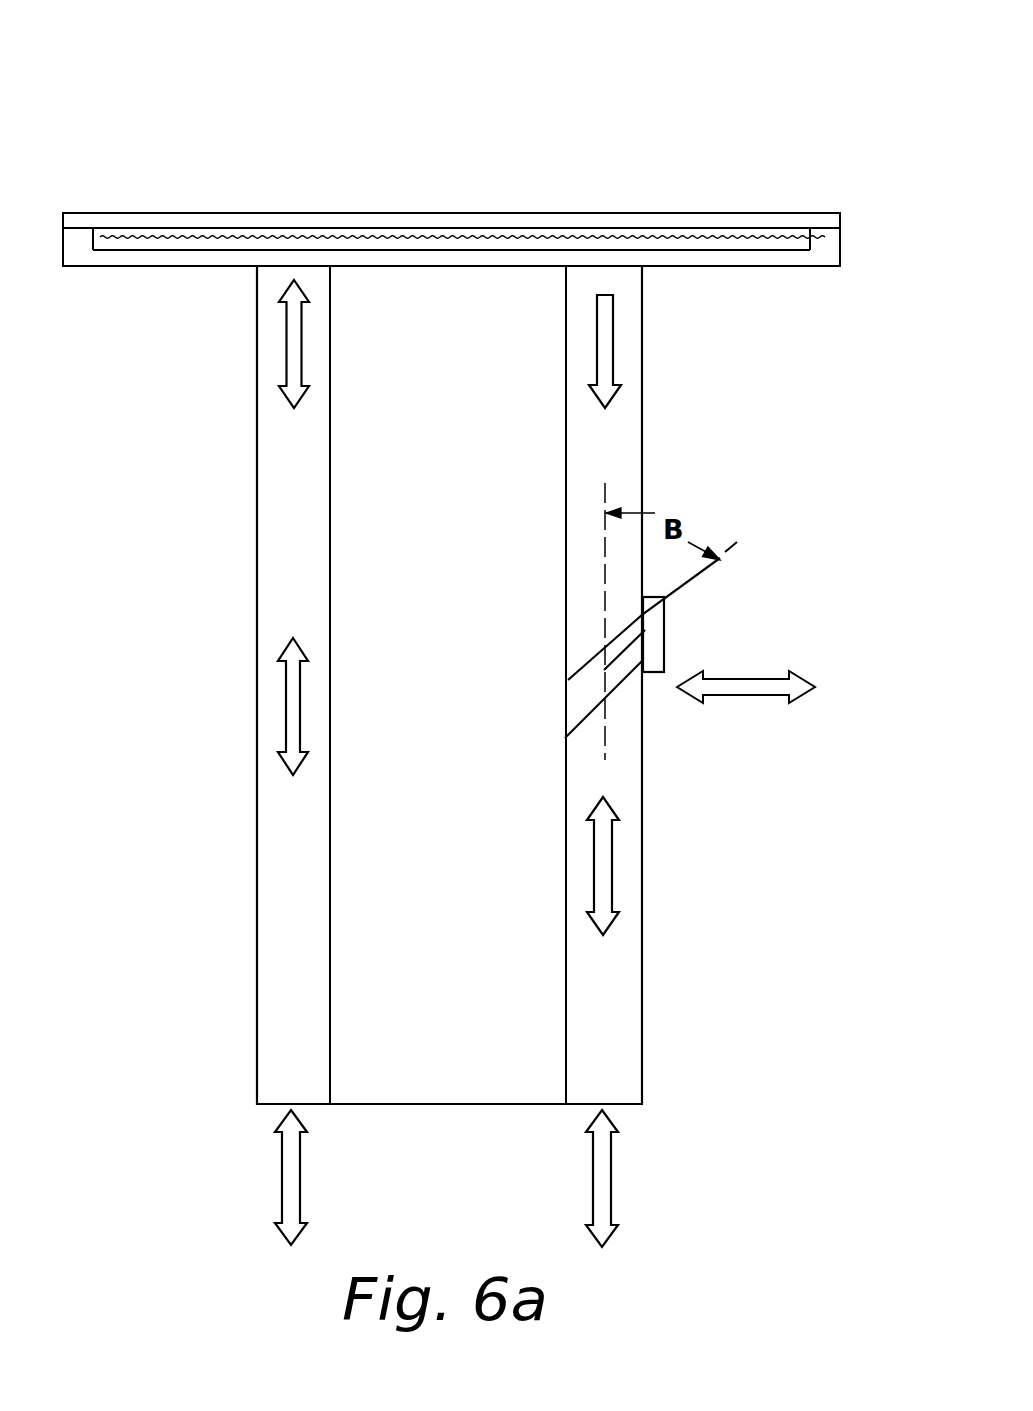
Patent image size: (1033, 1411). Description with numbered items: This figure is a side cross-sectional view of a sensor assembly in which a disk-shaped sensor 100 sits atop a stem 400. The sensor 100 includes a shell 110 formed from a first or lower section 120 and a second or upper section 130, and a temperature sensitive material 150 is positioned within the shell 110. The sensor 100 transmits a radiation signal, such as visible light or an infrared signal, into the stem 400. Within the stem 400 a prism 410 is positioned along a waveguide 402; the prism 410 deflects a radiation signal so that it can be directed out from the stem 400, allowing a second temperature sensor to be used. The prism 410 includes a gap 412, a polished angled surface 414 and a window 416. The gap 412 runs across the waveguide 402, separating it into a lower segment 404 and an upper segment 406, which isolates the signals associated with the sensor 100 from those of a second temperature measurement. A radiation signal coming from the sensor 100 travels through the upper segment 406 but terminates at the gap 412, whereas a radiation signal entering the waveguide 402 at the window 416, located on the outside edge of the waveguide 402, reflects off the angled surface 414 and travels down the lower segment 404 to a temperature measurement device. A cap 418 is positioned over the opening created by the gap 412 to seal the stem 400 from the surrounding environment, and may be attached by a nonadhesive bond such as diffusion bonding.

The sensor 100 is at (127, 172).
The shell 110 is at (246, 203).
The lower section 120 is at (181, 255).
The upper section 130 is at (337, 222).
The temperature sensitive material 150 is at (695, 243).
The stem 400 is at (657, 1029).
The waveguide 402 is at (623, 878).
The lower segment 404 is at (584, 978).
The upper segment 406 is at (628, 432).
The prism 410 is at (545, 743).
The gap 412 is at (592, 680).
The polished angled surface 414 is at (584, 717).
The window 416 is at (646, 687).
The cap 418 is at (655, 638).